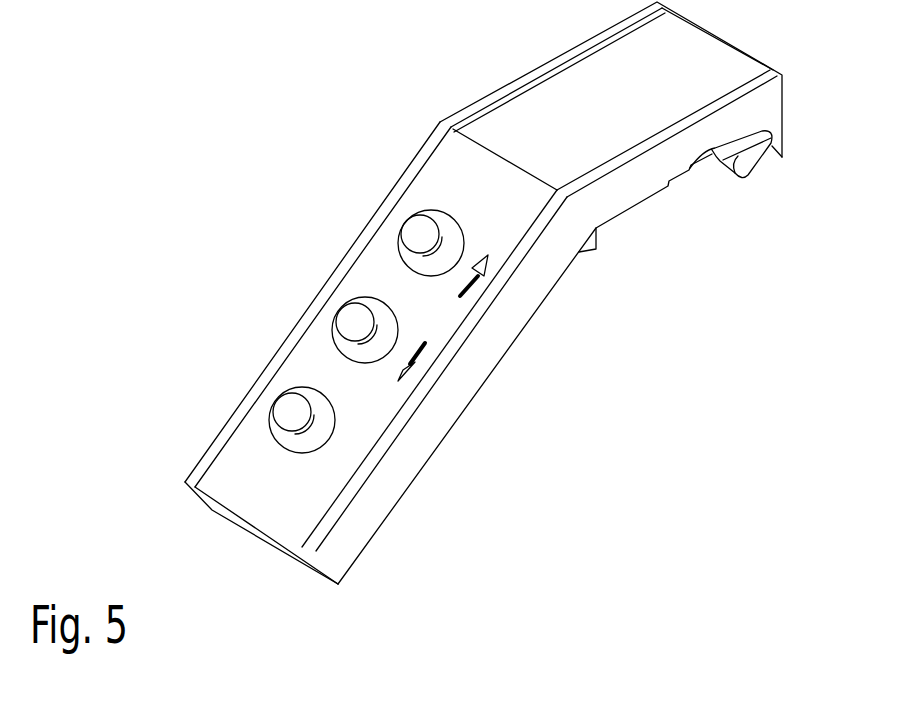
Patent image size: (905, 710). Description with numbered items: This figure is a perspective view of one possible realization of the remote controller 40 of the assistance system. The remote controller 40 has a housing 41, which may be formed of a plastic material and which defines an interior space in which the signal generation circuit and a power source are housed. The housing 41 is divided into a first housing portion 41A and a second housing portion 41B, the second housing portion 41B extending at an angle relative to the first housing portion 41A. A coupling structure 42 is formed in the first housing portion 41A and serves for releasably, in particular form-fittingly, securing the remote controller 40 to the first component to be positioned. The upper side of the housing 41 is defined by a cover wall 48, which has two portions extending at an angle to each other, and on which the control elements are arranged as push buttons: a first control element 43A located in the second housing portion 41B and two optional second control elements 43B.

The remote controller 40 is at (252, 188).
The housing 41 is at (188, 478).
The first housing portion 41A is at (582, 83).
The second housing portion 41B is at (490, 350).
The coupling structure 42 is at (692, 205).
The first control element 43A is at (288, 410).
The second control elements 43B is at (413, 233).
The cover wall 48 is at (440, 178).